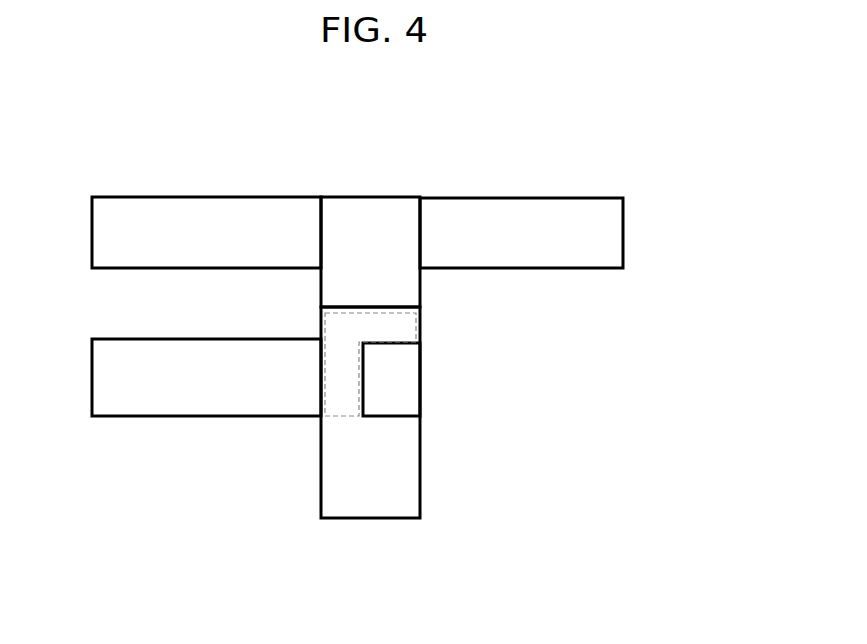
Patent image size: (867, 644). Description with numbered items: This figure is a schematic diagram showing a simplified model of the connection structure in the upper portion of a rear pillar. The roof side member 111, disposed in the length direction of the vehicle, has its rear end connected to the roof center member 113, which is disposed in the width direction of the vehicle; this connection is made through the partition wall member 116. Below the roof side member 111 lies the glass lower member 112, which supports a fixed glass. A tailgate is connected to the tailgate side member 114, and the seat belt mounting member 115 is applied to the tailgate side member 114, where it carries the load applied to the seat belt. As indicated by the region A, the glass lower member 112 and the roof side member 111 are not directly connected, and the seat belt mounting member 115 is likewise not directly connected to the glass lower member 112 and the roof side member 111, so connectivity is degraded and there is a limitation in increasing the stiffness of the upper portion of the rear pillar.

The roof side member 111 is at (197, 208).
The glass lower member 112 is at (202, 402).
The roof center member 113 is at (533, 207).
The tailgate side member 114 is at (375, 498).
The seat belt mounting member 115 is at (407, 388).
The partition wall member 116 is at (372, 227).
The region A is at (424, 320).